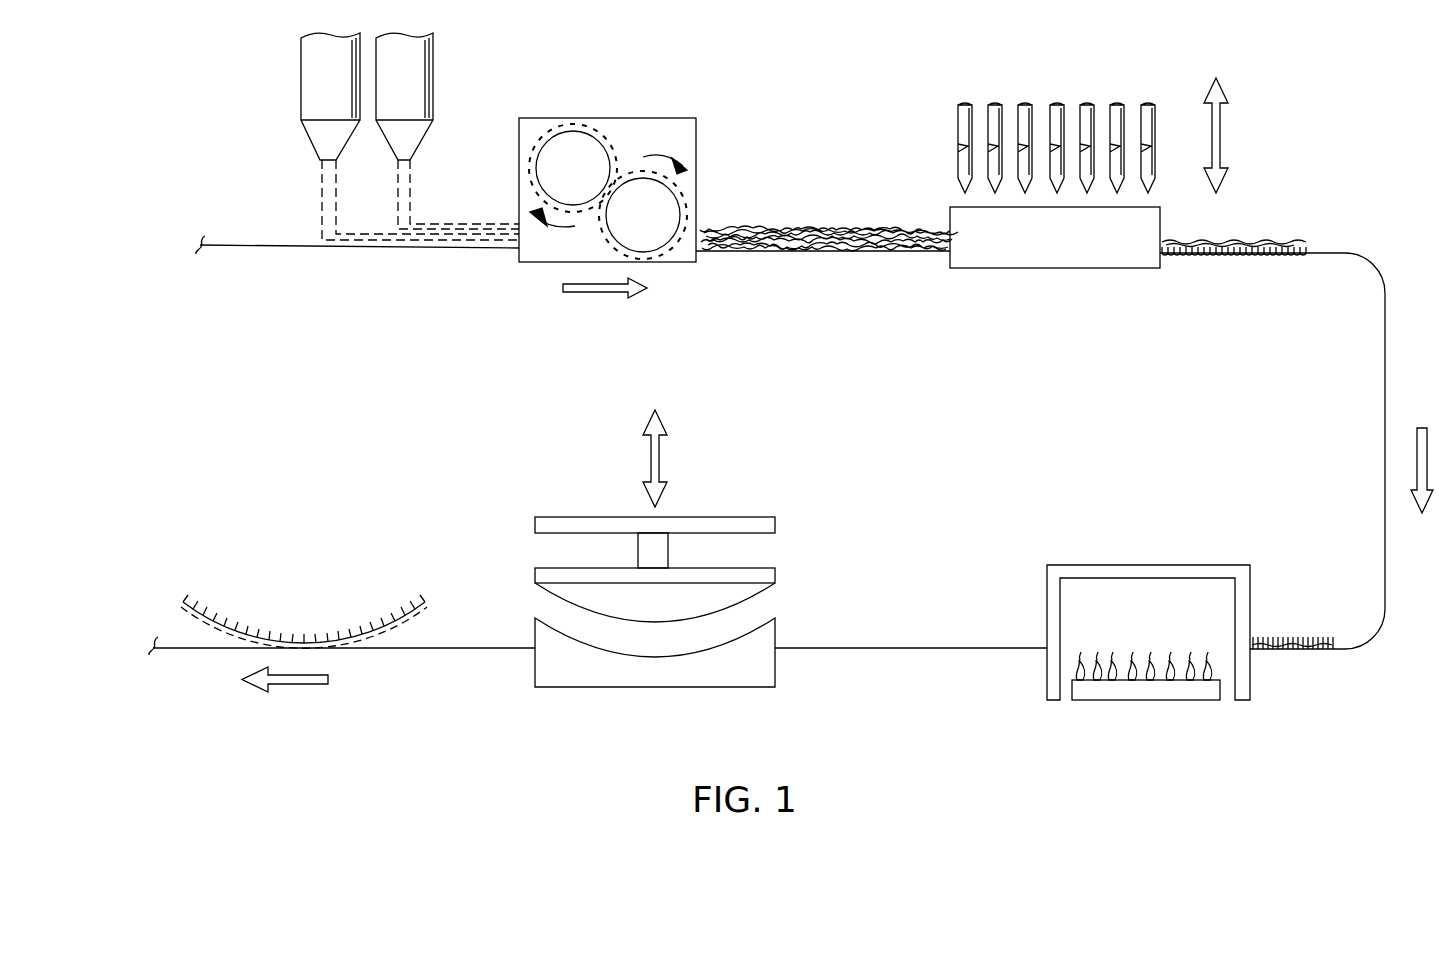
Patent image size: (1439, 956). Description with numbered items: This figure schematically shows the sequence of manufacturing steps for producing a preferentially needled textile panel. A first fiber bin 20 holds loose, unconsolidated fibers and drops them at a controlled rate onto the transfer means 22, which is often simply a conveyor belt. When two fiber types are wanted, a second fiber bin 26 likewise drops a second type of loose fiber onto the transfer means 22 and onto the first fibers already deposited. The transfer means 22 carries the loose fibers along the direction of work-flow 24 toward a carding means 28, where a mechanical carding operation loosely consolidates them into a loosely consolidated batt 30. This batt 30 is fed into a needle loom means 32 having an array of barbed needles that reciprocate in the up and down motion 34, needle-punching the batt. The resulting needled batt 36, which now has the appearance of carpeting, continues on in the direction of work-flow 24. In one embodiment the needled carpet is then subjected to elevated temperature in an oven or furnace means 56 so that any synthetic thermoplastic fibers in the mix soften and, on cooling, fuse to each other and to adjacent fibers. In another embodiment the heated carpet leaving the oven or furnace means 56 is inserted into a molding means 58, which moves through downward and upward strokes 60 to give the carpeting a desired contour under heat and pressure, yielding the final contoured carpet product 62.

The first fiber bin 20 is at (301, 42).
The transfer means 22 is at (210, 247).
The direction of work-flow 24 is at (603, 292).
The second fiber bin 26 is at (434, 50).
The carding means 28 is at (618, 118).
The loosely consolidated batt 30 is at (835, 228).
The needle loom means 32 is at (1058, 105).
The up and down motion 34 is at (1222, 125).
The needled batt 36 is at (1286, 242).
The oven or furnace means 56 is at (1162, 565).
The molding means 58 is at (697, 517).
The downward and upward strokes 60 is at (666, 422).
The final contoured carpet product 62 is at (278, 637).